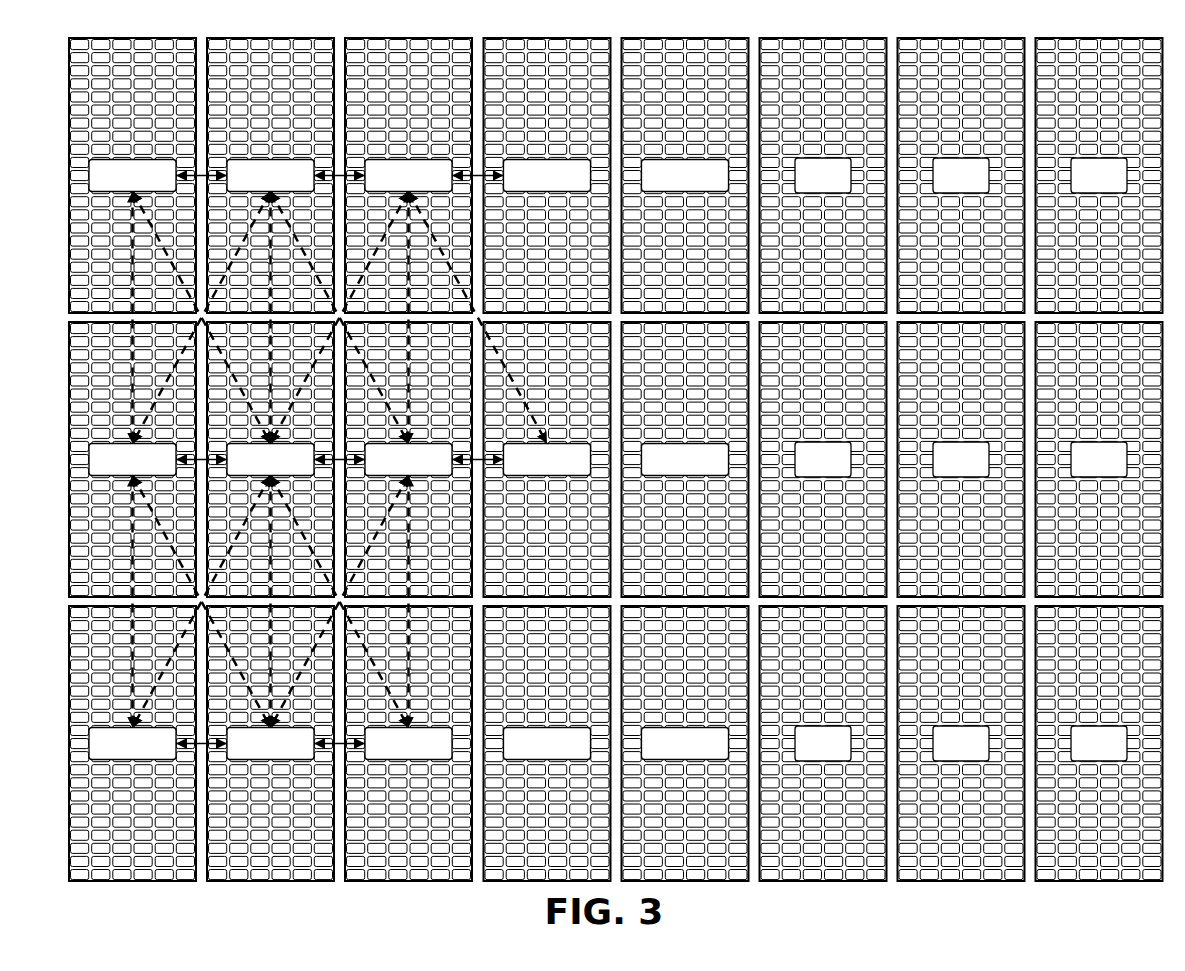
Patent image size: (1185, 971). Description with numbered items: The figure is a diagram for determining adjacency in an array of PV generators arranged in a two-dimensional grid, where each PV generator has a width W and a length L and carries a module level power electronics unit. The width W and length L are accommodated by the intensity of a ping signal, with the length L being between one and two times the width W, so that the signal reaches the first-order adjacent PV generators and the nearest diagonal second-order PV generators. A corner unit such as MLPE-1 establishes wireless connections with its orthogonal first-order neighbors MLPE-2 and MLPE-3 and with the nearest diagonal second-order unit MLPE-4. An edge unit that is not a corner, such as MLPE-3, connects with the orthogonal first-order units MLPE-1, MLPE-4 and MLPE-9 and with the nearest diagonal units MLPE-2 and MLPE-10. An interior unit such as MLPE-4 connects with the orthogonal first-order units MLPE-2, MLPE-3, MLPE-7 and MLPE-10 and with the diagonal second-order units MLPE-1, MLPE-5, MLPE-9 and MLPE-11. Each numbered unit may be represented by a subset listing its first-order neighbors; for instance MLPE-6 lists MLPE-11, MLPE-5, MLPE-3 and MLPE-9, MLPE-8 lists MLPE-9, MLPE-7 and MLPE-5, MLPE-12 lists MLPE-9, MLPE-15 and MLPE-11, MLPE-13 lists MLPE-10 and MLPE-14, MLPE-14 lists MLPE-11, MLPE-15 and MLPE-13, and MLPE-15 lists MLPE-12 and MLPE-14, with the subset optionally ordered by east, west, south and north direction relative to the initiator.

The corner MLPE MLPE-1 is at (132, 175).
The MLPE MLPE-2 is at (270, 175).
The edge MLPE MLPE-3 is at (408, 175).
The interior MLPE MLPE-4 is at (132, 459).
The MLPE MLPE-5 is at (270, 459).
The MLPE MLPE-6 is at (408, 459).
The MLPE MLPE-7 is at (132, 743).
The MLPE MLPE-8 is at (270, 743).
The MLPE MLPE-9 is at (408, 743).
The MLPE MLPE-10 is at (547, 175).
The MLPE MLPE-11 is at (547, 459).
The MLPE MLPE-12 is at (547, 743).
The MLPE MLPE-13 is at (685, 175).
The MLPE MLPE-14 is at (685, 459).
The MLPE MLPE-15 is at (685, 743).
The width of PV generator W is at (195, 30).
The length of PV generator L is at (62, 40).